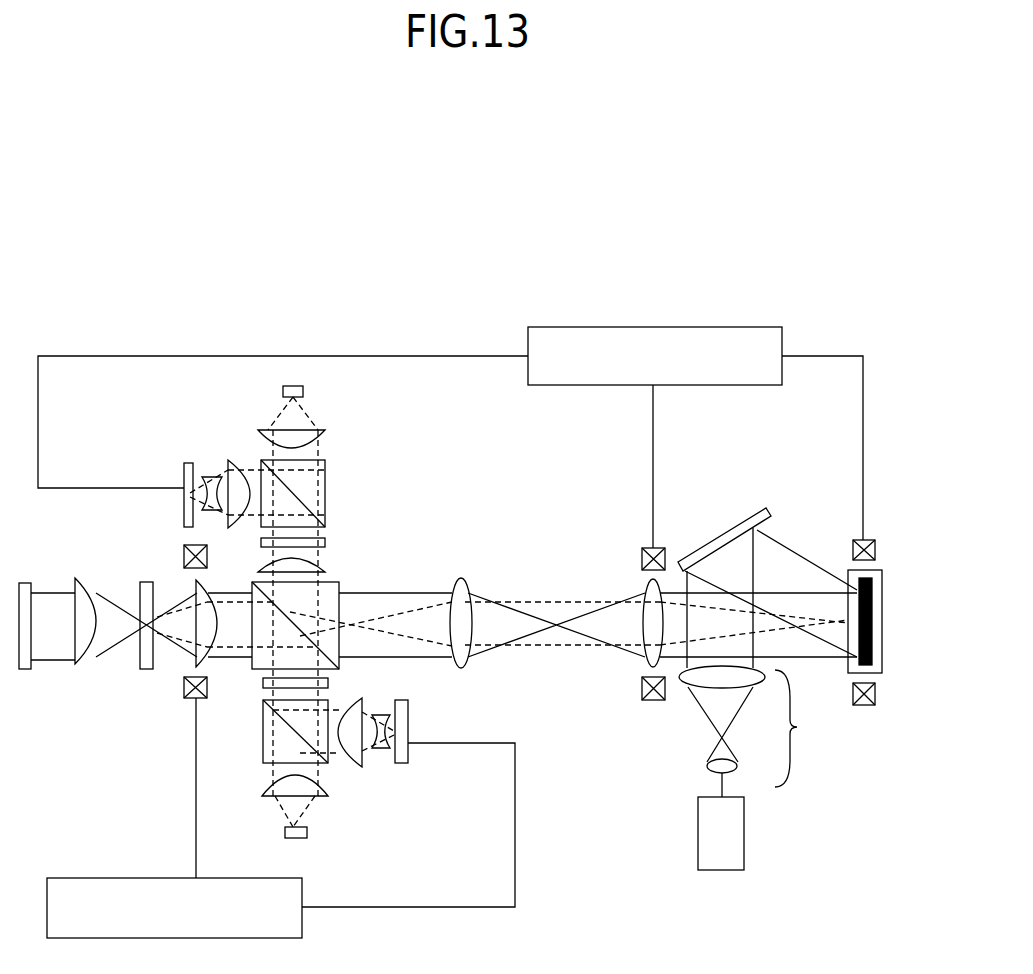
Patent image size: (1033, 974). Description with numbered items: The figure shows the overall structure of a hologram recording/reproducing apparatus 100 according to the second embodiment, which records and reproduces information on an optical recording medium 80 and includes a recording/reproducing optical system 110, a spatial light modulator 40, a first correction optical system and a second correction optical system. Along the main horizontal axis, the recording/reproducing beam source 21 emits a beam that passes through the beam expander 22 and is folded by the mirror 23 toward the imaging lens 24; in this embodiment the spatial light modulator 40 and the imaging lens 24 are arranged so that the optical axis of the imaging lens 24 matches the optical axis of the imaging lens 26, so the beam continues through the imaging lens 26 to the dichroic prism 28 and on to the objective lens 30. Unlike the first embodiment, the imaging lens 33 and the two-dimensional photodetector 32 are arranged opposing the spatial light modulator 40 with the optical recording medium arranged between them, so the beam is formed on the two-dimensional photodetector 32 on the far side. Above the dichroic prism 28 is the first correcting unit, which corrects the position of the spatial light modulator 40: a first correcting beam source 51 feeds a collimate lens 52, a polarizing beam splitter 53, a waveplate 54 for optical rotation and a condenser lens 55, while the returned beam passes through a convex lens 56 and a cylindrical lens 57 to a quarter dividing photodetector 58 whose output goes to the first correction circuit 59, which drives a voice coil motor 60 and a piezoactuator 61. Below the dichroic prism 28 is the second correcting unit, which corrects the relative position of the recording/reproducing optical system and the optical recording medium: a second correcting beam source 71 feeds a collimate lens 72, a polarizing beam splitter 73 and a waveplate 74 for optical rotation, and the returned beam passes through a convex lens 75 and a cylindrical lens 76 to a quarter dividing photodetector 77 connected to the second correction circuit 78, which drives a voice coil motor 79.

The recording/reproducing beam source 21 is at (745, 822).
The beam expander 22 is at (753, 731).
The mirror 23 is at (737, 531).
The imaging lens 24 is at (646, 660).
The imaging lens 26 is at (469, 593).
The dichroic prism 28 is at (256, 669).
The objective lens 30 is at (198, 665).
The two-dimensional photodetector 32 is at (30, 669).
The imaging lens 33 is at (88, 664).
The spatial light modulator 40 is at (883, 598).
The first correcting beam source 51 is at (305, 392).
The collimate lens 52 is at (270, 430).
The polarizing beam splitter 53 is at (260, 465).
The waveplate for optical rotation 54 is at (325, 542).
The condenser lens 55 is at (258, 567).
The convex lens 56 is at (228, 462).
The cylindrical lens 57 is at (204, 477).
The quarter dividing photodetector 58 is at (184, 488).
The first correction circuit 59 is at (704, 327).
The voice coil motor 60 is at (654, 700).
The piezoactuator 61 is at (853, 548).
The second correcting beam source 71 is at (308, 838).
The collimate lens 72 is at (328, 792).
The polarizing beam splitter 73 is at (265, 765).
The waveplate for optical rotation 74 is at (330, 684).
The convex lens 75 is at (360, 767).
The cylindrical lens 76 is at (385, 748).
The quarter dividing photodetector 77 is at (410, 712).
The second correction circuit 78 is at (134, 878).
The voice coil motor 79 is at (192, 699).
The optical recording medium 80 is at (146, 581).
The hologram recording/reproducing apparatus 100 is at (654, 293).
The recording/reproducing optical system 110 is at (652, 788).